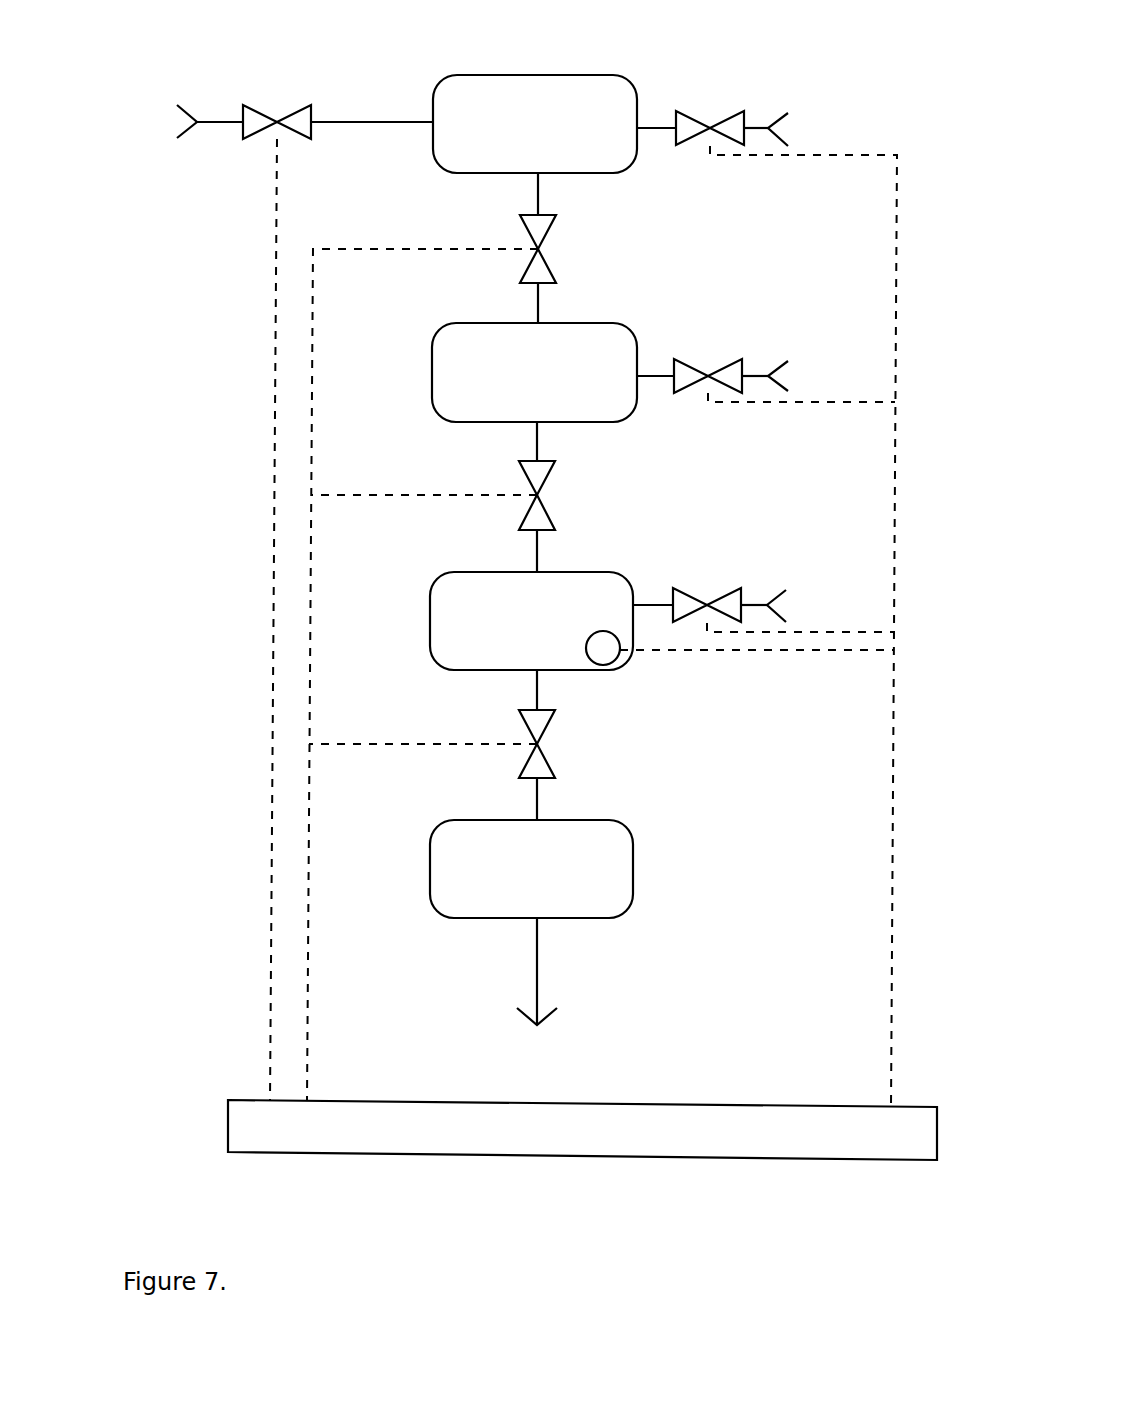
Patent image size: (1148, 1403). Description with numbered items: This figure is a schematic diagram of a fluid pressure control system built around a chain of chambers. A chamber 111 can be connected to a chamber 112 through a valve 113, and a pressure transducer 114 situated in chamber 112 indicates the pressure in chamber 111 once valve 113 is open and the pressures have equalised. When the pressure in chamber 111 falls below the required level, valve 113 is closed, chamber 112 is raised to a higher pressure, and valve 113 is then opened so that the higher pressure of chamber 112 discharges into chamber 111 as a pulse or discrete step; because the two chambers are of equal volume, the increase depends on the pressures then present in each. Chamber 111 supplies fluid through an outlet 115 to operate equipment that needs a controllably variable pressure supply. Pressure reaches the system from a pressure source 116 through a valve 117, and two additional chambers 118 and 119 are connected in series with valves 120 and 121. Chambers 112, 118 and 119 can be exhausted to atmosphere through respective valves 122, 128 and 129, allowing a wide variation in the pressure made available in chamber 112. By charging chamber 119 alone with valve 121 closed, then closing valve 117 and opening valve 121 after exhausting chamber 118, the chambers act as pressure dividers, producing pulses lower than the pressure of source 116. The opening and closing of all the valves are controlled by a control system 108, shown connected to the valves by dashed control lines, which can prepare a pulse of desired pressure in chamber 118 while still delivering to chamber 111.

The control system 108 is at (622, 1133).
The chamber 111 is at (448, 877).
The chamber 112 is at (450, 625).
The valve 113 is at (545, 765).
The pressure transducer 114 is at (605, 655).
The outlet 115 is at (553, 1061).
The pressure source 116 is at (165, 134).
The valve 117 is at (252, 132).
The chamber 118 is at (452, 378).
The chamber 119 is at (458, 128).
The valve 120 is at (540, 478).
The valve 121 is at (540, 228).
The valve 122 is at (684, 600).
The valve 128 is at (688, 372).
The valve 129 is at (688, 125).